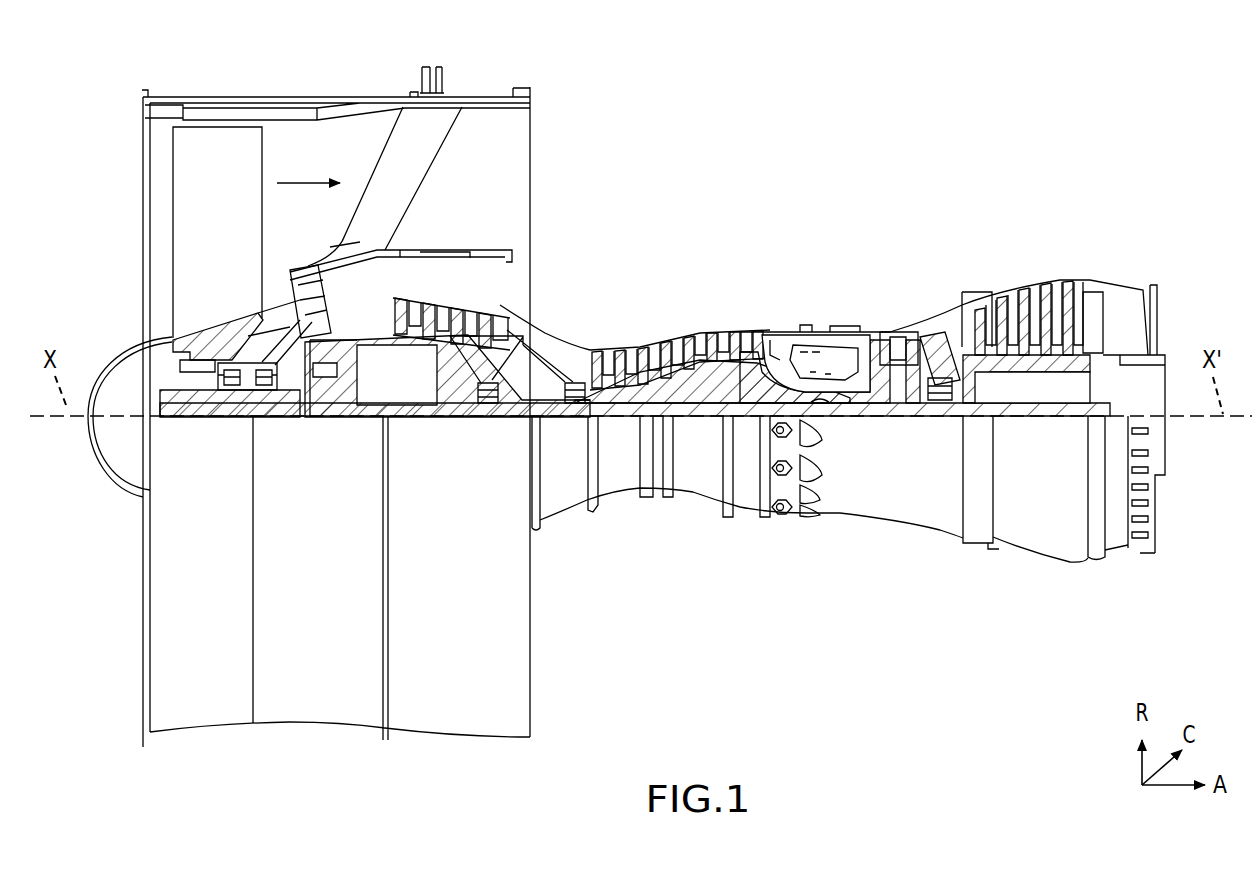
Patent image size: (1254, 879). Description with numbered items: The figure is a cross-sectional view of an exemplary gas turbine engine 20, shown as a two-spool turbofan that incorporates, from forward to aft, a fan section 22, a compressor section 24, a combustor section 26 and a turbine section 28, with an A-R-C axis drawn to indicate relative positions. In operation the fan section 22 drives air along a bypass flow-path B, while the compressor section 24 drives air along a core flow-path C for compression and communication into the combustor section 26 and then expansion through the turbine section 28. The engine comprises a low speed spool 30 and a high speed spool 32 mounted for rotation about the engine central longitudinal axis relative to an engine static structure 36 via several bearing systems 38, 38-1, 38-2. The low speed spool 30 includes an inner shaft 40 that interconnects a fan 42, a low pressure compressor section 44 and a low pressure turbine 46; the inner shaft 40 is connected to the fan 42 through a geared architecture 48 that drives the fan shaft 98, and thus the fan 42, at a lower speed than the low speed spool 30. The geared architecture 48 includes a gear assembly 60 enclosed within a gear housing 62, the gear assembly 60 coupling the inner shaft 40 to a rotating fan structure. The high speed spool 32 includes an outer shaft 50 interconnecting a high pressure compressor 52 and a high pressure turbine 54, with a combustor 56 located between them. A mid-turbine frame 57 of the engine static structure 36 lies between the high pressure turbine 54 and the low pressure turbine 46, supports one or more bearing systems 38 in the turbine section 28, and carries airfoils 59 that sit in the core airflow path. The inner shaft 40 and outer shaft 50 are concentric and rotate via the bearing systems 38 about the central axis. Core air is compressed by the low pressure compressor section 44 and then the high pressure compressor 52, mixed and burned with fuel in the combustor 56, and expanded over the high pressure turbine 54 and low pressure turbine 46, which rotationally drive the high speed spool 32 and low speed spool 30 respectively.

The gas turbine engine 20 is at (880, 130).
The fan section 22 is at (382, 78).
The compressor section 24 is at (385, 212).
The combustor section 26 is at (880, 212).
The turbine section 28 is at (1097, 212).
The low speed spool 30 is at (705, 445).
The high speed spool 32 is at (743, 385).
The engine static structure 36 is at (130, 733).
The bearing system 38 is at (937, 403).
The bearing system 38-1 is at (227, 392).
The bearing system 38-2 is at (485, 403).
The inner shaft 40 is at (553, 416).
The fan 42 is at (226, 228).
The low pressure compressor section 44 is at (463, 312).
The low pressure turbine 46 is at (1027, 300).
The geared architecture 48 is at (352, 428).
The outer shaft 50 is at (820, 398).
The high pressure compressor 52 is at (700, 342).
The high pressure turbine 54 is at (892, 328).
The combustor 56 is at (817, 353).
The mid-turbine frame 57 is at (945, 343).
The airfoils 59 is at (960, 345).
The gear assembly 60 is at (355, 397).
The gear housing 62 is at (347, 357).
The fan shaft 98 is at (272, 420).
The bypass flow-path B is at (305, 183).
The core flow-path C is at (272, 290).